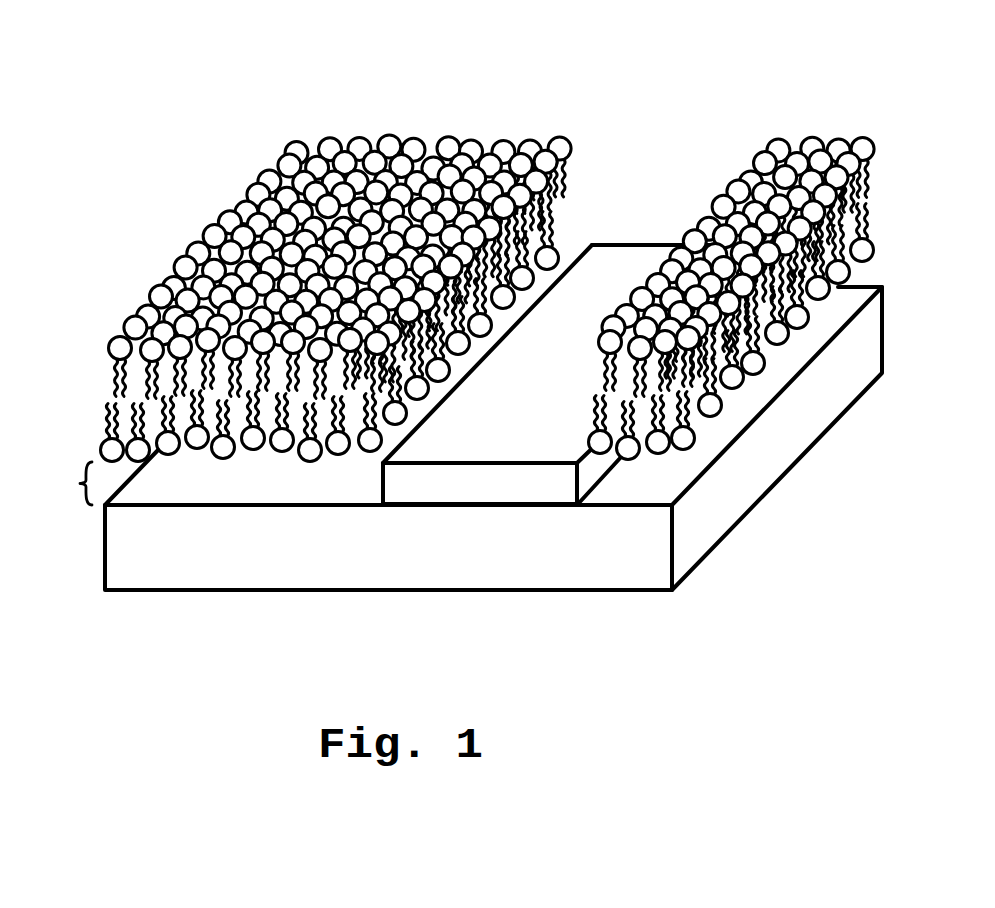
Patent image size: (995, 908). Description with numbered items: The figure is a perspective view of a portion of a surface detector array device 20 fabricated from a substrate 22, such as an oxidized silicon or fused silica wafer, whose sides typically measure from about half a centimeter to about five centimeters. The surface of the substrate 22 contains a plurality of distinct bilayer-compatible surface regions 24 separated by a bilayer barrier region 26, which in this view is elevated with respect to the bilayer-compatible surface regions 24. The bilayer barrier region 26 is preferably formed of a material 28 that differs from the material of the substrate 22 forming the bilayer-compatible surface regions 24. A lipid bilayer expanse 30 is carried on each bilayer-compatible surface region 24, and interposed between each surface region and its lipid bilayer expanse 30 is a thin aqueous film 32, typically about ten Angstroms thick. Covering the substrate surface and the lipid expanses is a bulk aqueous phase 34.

The surface detector array device 20 is at (482, 341).
The substrate 22 is at (320, 563).
The bilayer-compatible surface regions 24 is at (293, 490).
The bilayer barrier regions 26 is at (445, 440).
The barrier material 28 is at (463, 497).
The lipid bilayer expanse 30 is at (527, 227).
The aqueous film 32 is at (63, 483).
The bulk aqueous phase 34 is at (466, 33).